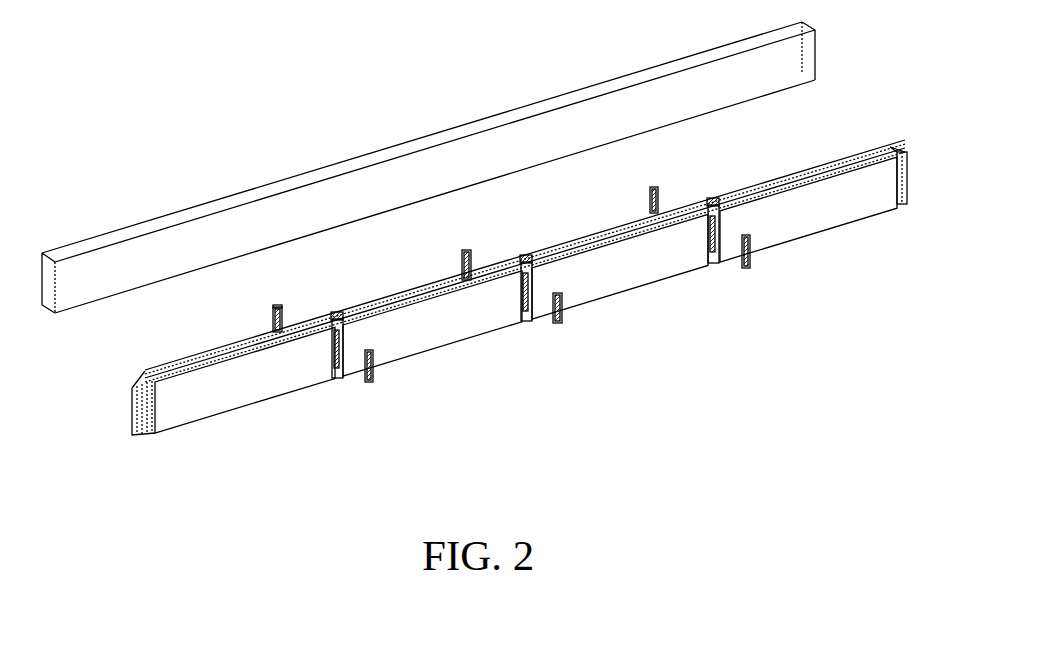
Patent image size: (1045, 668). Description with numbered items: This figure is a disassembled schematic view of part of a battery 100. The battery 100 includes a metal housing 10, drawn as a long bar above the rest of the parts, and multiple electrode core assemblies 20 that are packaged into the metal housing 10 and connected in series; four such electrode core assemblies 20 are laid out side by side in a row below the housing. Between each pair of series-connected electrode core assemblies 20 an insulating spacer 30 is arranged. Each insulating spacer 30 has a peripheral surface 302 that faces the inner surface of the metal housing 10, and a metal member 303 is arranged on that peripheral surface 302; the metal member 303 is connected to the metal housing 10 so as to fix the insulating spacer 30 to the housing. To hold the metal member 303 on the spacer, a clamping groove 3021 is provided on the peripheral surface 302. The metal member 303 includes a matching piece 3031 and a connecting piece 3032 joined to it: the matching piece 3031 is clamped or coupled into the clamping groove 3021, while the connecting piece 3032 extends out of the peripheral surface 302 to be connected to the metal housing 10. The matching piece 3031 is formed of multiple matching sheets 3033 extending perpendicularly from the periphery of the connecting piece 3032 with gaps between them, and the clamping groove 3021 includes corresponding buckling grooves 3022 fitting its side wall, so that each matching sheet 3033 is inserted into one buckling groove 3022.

The battery 100 is at (376, 118).
The metal housing 10 is at (235, 203).
The electrode core assembly 20 is at (242, 390).
The insulating spacer 30 is at (337, 380).
The peripheral surface 302 is at (334, 321).
The clamping groove 3021 is at (327, 380).
The buckling groove 3022 is at (728, 218).
The metal member 303 is at (277, 302).
The matching piece 3031 is at (292, 311).
The connecting piece 3032 is at (374, 366).
The matching sheet 3033 is at (269, 318).